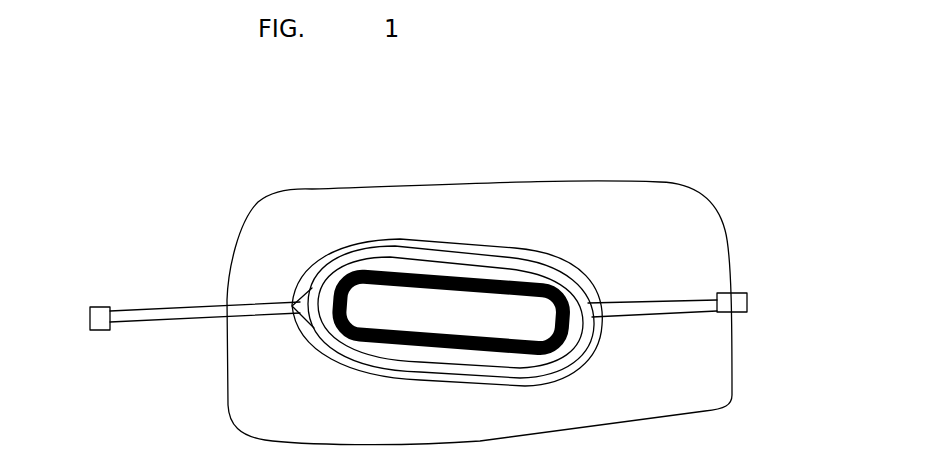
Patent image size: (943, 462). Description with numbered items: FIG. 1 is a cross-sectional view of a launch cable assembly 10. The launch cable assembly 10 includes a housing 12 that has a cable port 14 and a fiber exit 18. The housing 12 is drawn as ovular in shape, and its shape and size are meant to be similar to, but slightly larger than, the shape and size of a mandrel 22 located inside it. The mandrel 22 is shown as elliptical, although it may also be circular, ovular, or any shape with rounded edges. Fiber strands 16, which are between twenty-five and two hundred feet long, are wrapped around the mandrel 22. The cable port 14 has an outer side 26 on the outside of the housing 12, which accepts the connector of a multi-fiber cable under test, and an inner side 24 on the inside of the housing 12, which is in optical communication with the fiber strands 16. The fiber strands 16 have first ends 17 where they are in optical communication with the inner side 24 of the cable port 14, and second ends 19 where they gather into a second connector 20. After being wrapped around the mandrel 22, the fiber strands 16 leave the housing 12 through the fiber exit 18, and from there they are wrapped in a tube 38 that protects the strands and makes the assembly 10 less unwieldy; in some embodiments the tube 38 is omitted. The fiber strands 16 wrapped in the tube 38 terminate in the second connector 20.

The launch cable assembly 10 is at (569, 116).
The housing 12 is at (693, 186).
The cable port 14 is at (731, 311).
The fiber strands 16 is at (546, 273).
The first ends 17 is at (717, 314).
The fiber exit 18 is at (222, 309).
The second ends 19 is at (115, 318).
The second connector 20 is at (98, 316).
The mandrel 22 is at (463, 342).
The inner side 24 is at (719, 293).
The outer side 26 is at (747, 301).
The tube 38 is at (167, 313).